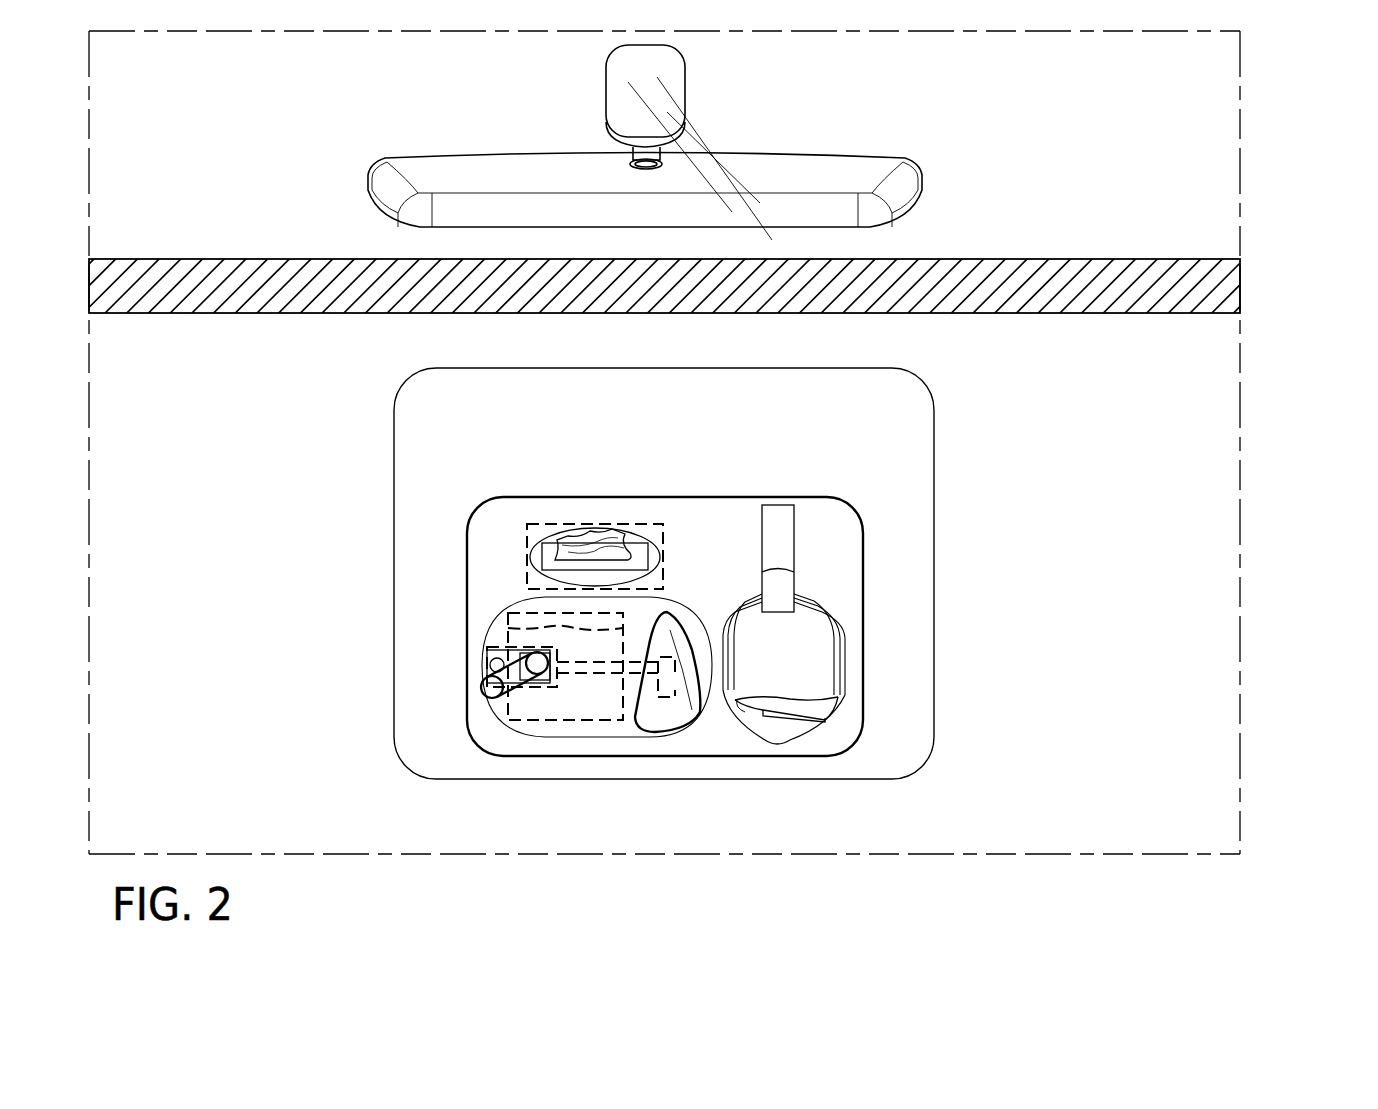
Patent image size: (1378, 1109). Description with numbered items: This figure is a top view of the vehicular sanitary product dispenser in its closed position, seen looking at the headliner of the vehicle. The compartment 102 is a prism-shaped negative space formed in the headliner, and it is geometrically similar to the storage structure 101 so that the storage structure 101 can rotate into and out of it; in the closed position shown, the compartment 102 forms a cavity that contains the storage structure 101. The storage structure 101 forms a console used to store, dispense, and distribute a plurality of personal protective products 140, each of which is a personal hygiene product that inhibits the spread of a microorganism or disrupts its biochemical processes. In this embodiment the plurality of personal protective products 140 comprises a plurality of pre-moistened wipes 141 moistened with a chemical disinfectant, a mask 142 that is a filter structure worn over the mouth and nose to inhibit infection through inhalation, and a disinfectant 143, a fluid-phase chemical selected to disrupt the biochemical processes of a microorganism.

The storage structure 101 is at (867, 634).
The compartment 102 is at (867, 511).
The plurality of personal protective products 140 is at (811, 726).
The plurality of pre-moistened wipes 141 is at (565, 547).
The mask 142 is at (783, 733).
The disinfectant 143 is at (527, 630).